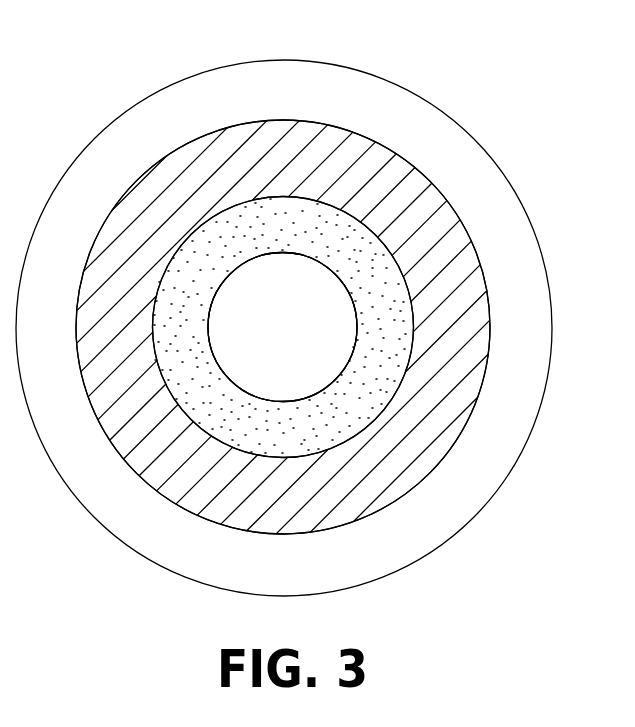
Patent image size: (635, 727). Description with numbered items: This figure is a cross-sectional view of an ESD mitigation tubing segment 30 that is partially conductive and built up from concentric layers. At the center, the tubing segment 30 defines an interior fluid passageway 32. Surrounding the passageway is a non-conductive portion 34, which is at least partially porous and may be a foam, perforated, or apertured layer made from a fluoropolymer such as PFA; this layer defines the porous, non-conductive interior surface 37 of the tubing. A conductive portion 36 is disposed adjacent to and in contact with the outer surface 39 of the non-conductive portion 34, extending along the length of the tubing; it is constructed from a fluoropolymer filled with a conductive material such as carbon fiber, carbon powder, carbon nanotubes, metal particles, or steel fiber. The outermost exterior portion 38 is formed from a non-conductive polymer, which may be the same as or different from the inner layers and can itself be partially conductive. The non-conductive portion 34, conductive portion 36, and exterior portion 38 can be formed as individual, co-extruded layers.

The tubing segment 30 is at (314, 299).
The interior fluid passageway 32 is at (338, 313).
The non-conductive portion 34 is at (372, 272).
The conductive portion 36 is at (419, 212).
The porous, non-conductive interior surface 37 is at (334, 381).
The exterior portion 38 is at (487, 455).
The outer surface 39 is at (413, 340).